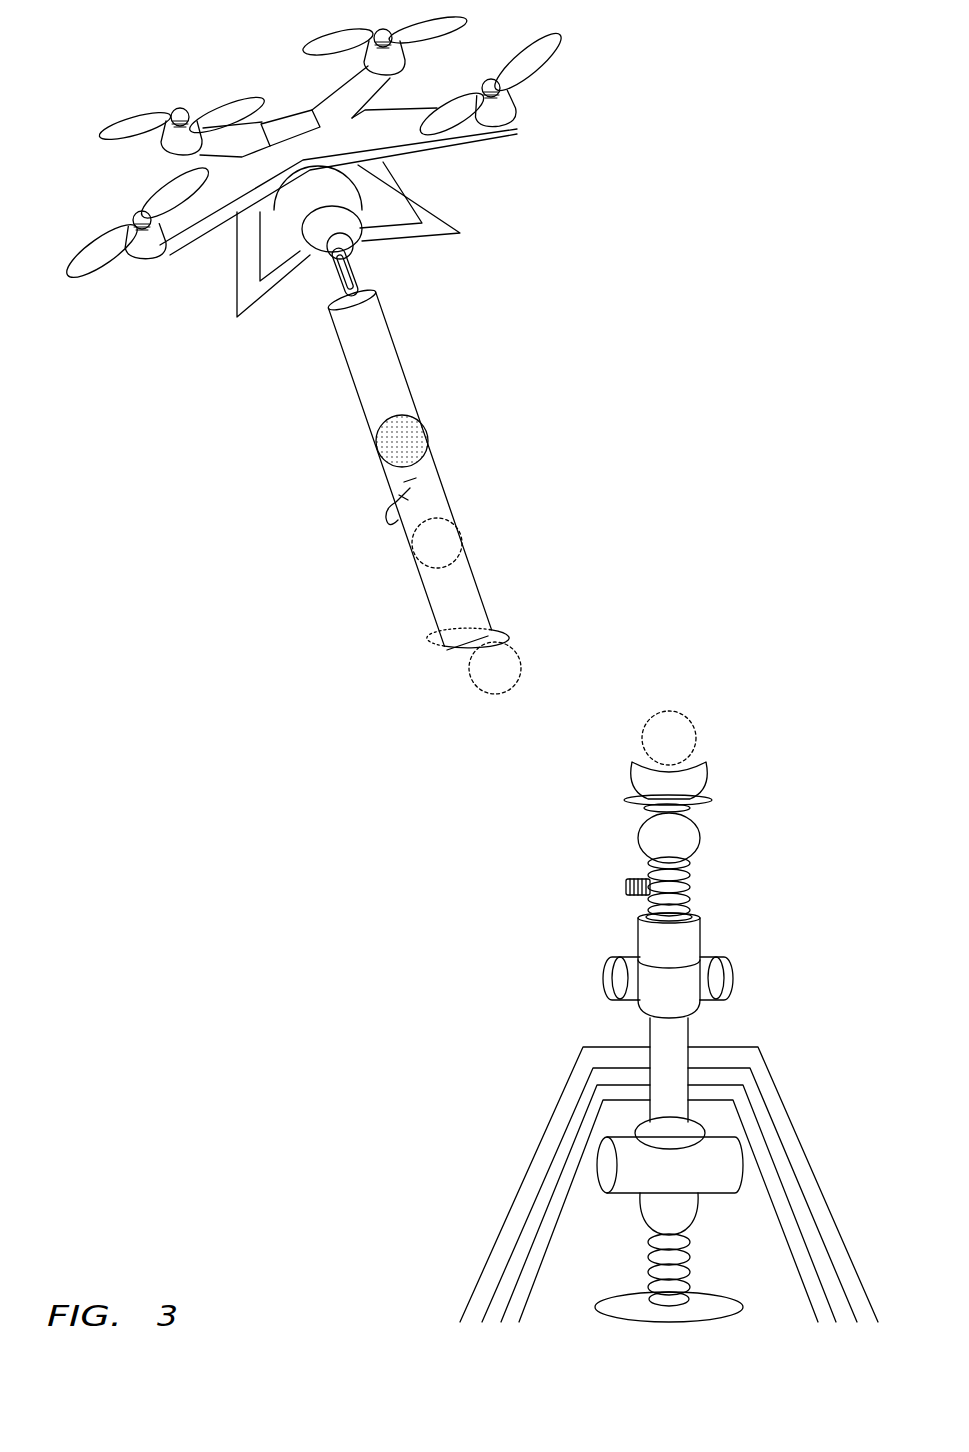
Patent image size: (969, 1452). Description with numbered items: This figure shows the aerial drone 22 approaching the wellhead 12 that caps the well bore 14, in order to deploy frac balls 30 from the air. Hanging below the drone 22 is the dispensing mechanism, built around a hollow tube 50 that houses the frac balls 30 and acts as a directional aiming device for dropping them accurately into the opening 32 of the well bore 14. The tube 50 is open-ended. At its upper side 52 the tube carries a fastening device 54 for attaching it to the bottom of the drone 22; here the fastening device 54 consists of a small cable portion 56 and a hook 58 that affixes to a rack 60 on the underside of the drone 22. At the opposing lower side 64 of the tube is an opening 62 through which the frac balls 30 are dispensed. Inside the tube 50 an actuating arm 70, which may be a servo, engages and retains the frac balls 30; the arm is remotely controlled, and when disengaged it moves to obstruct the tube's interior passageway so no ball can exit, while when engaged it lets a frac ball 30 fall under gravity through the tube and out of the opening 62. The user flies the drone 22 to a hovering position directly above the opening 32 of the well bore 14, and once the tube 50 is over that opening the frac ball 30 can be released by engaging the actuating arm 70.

The aerial drone 22 is at (592, 45).
The hook 58 is at (360, 245).
The fastening device 54 is at (430, 262).
The cable portion 56 is at (358, 284).
The rack 60 is at (253, 295).
The upper side 52 is at (433, 347).
The hollow tube 50 is at (356, 398).
The frac balls 30 is at (382, 446).
The actuating arm 70 is at (390, 527).
The lower side 64 is at (508, 620).
The opening 62 is at (458, 657).
The opening 32 is at (704, 741).
The wellhead 12 is at (700, 827).
The well bore 14 is at (540, 866).